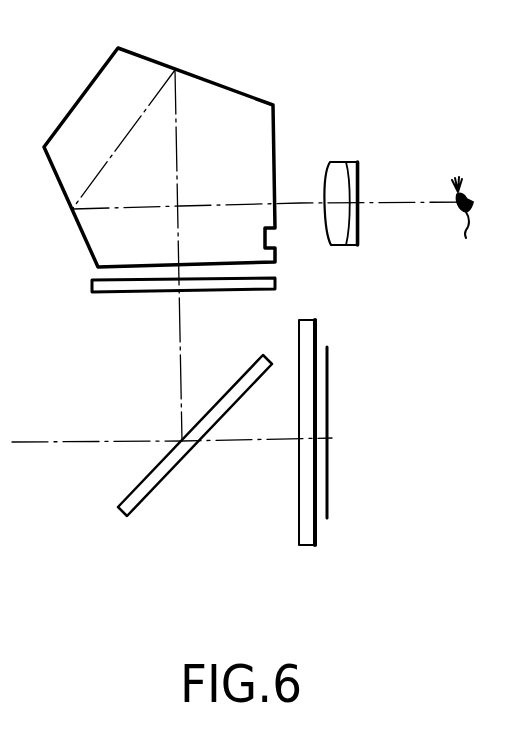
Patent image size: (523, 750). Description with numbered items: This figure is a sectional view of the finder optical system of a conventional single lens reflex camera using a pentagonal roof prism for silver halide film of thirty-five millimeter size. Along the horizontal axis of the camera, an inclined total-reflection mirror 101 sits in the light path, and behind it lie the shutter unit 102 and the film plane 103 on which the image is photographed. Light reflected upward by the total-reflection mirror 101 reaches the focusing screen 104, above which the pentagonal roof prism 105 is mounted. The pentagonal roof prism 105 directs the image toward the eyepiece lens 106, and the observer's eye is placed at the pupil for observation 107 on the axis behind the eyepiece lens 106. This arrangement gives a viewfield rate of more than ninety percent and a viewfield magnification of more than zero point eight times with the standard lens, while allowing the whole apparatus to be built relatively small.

The total-reflection mirror 101 is at (151, 493).
The shutter unit 102 is at (302, 522).
The film plane 103 is at (330, 495).
The focusing screen 104 is at (127, 291).
The pentagonal roof prism 105 is at (243, 94).
The eyepiece lens 106 is at (337, 168).
The pupil for observation 107 is at (461, 226).